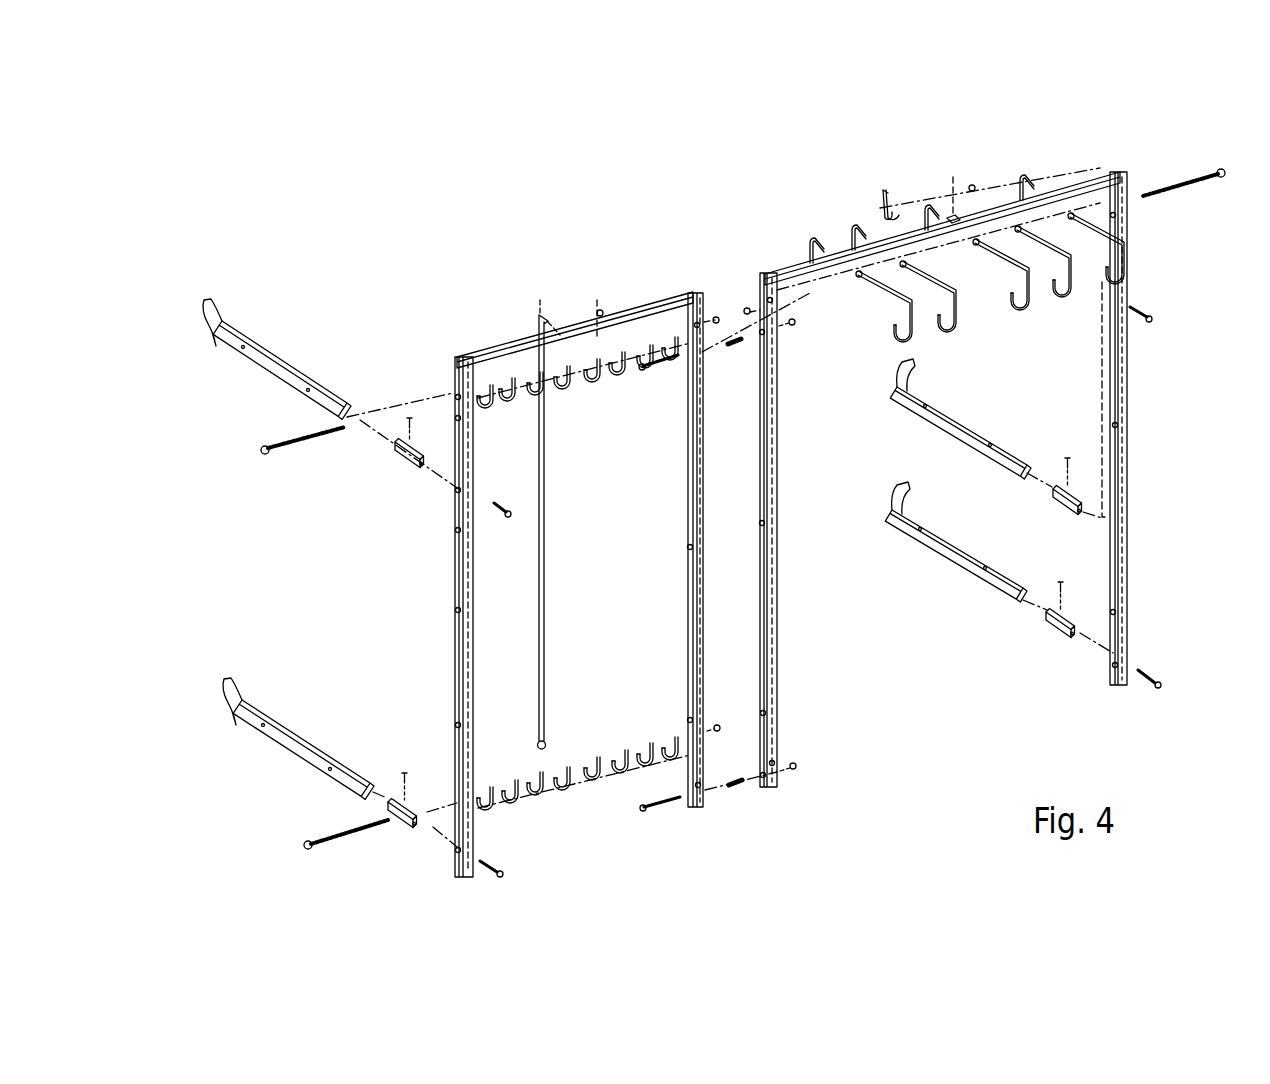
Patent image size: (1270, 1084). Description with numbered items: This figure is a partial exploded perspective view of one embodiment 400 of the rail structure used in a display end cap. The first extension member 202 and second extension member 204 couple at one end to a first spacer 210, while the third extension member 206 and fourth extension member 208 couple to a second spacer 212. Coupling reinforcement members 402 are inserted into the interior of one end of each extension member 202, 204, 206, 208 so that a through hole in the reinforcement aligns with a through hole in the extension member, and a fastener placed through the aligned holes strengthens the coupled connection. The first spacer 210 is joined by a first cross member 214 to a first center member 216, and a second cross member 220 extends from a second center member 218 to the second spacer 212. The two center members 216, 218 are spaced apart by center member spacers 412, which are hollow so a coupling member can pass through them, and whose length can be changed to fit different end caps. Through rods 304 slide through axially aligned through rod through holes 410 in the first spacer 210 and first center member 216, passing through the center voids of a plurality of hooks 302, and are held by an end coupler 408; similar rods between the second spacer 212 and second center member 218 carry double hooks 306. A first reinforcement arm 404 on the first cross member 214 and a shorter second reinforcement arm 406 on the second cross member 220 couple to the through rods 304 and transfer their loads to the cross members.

The rail structure embodiment 400 is at (356, 208).
The first extension member 202 is at (282, 360).
The second extension member 204 is at (287, 740).
The third extension member 206 is at (970, 427).
The fourth extension member 208 is at (935, 560).
The first spacer 210 is at (454, 532).
The second spacer 212 is at (1126, 543).
The first cross member 214 is at (480, 352).
The first center member 216 is at (688, 462).
The second center member 218 is at (770, 437).
The second cross member 220 is at (1068, 185).
The hooks 302 is at (673, 763).
The through rods 304 is at (277, 435).
The double hooks 306 is at (1010, 124).
The coupling reinforcement members 402 is at (400, 457).
The first reinforcement arm 404 is at (547, 312).
The second reinforcement arm 406 is at (880, 200).
The end coupler 408 is at (714, 318).
The through rod through holes 410 is at (695, 323).
The center member spacer 412 is at (739, 345).